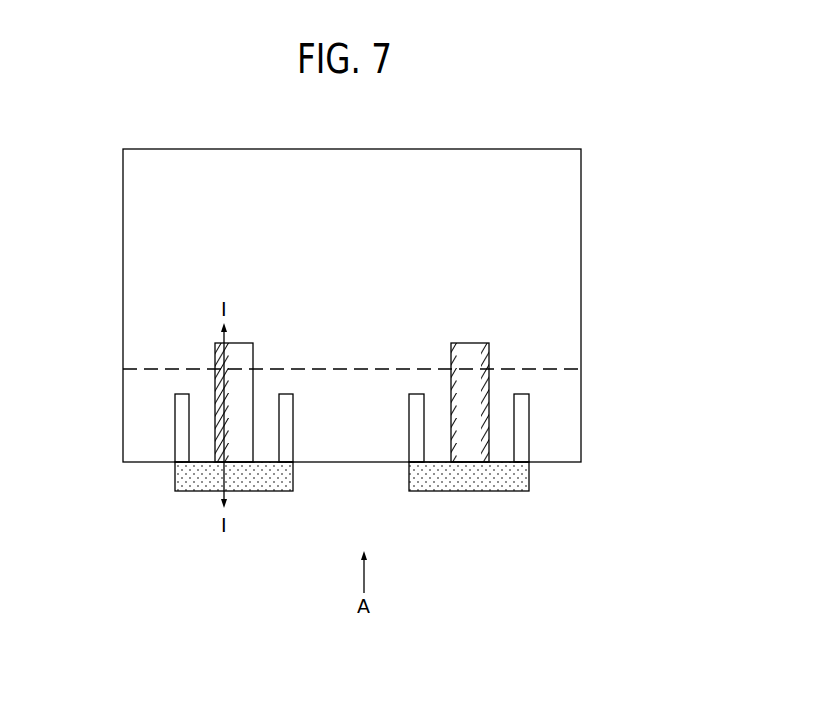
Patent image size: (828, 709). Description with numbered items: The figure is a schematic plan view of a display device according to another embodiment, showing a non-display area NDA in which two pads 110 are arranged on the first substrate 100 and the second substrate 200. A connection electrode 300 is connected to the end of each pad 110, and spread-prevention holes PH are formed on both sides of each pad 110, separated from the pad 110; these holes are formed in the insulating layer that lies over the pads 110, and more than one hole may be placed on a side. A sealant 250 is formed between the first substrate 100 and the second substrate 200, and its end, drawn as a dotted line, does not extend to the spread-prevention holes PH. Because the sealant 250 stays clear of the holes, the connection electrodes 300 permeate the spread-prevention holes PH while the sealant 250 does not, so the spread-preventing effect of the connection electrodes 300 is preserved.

The first substrate 100 is at (411, 305).
The second substrate 200 is at (581, 169).
The sealant 250 is at (566, 366).
The pad 110 is at (238, 343).
The connection electrode 300 is at (277, 478).
The spread-prevention hole PH is at (182, 433).
The non-display area NDA is at (351, 229).